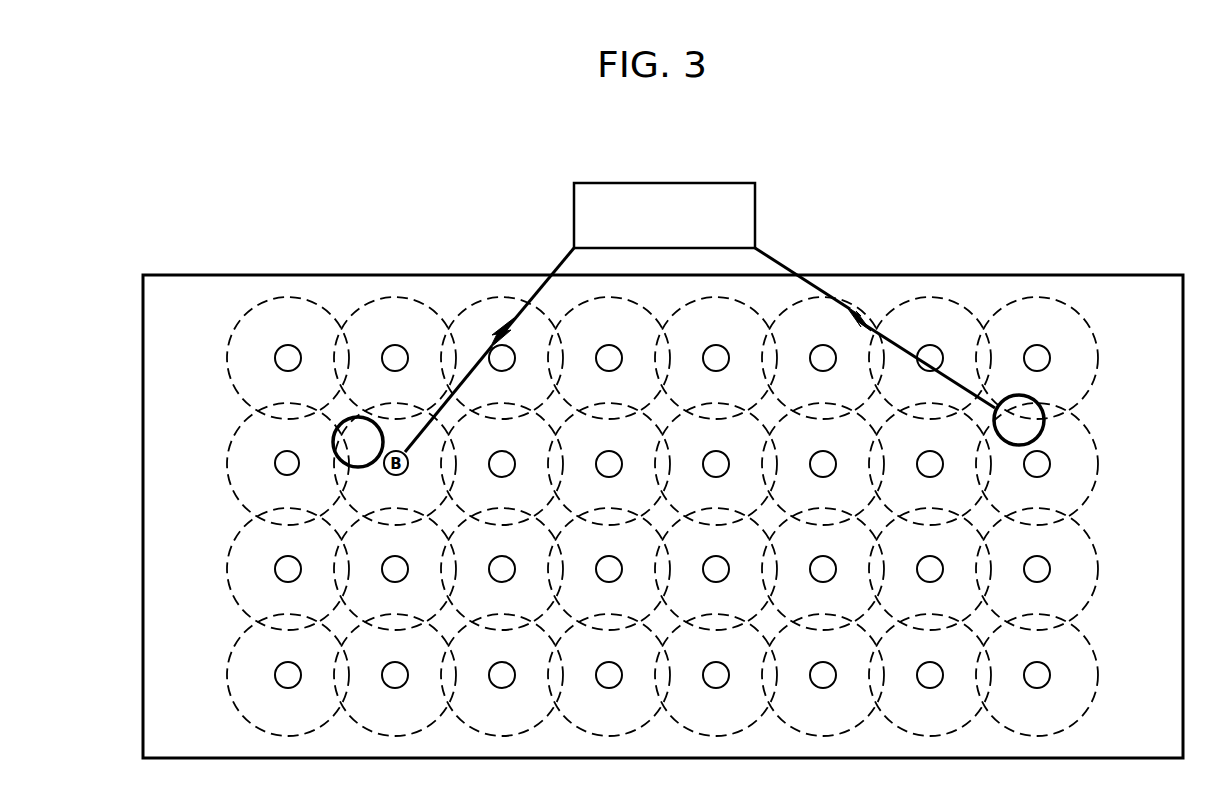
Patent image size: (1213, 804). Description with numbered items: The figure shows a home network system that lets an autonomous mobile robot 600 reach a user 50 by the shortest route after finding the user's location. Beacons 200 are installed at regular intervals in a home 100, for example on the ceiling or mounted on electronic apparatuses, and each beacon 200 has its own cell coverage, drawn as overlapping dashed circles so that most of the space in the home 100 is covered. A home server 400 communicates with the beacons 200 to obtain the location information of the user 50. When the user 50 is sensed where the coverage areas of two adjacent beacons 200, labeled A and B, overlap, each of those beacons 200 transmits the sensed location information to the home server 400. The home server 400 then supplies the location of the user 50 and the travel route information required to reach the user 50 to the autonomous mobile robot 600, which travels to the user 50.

The home 100 is at (279, 275).
The user 50 is at (333, 442).
The beacons 200 is at (275, 463).
The home server 400 is at (727, 183).
The autonomous mobile robot 600 is at (1044, 418).